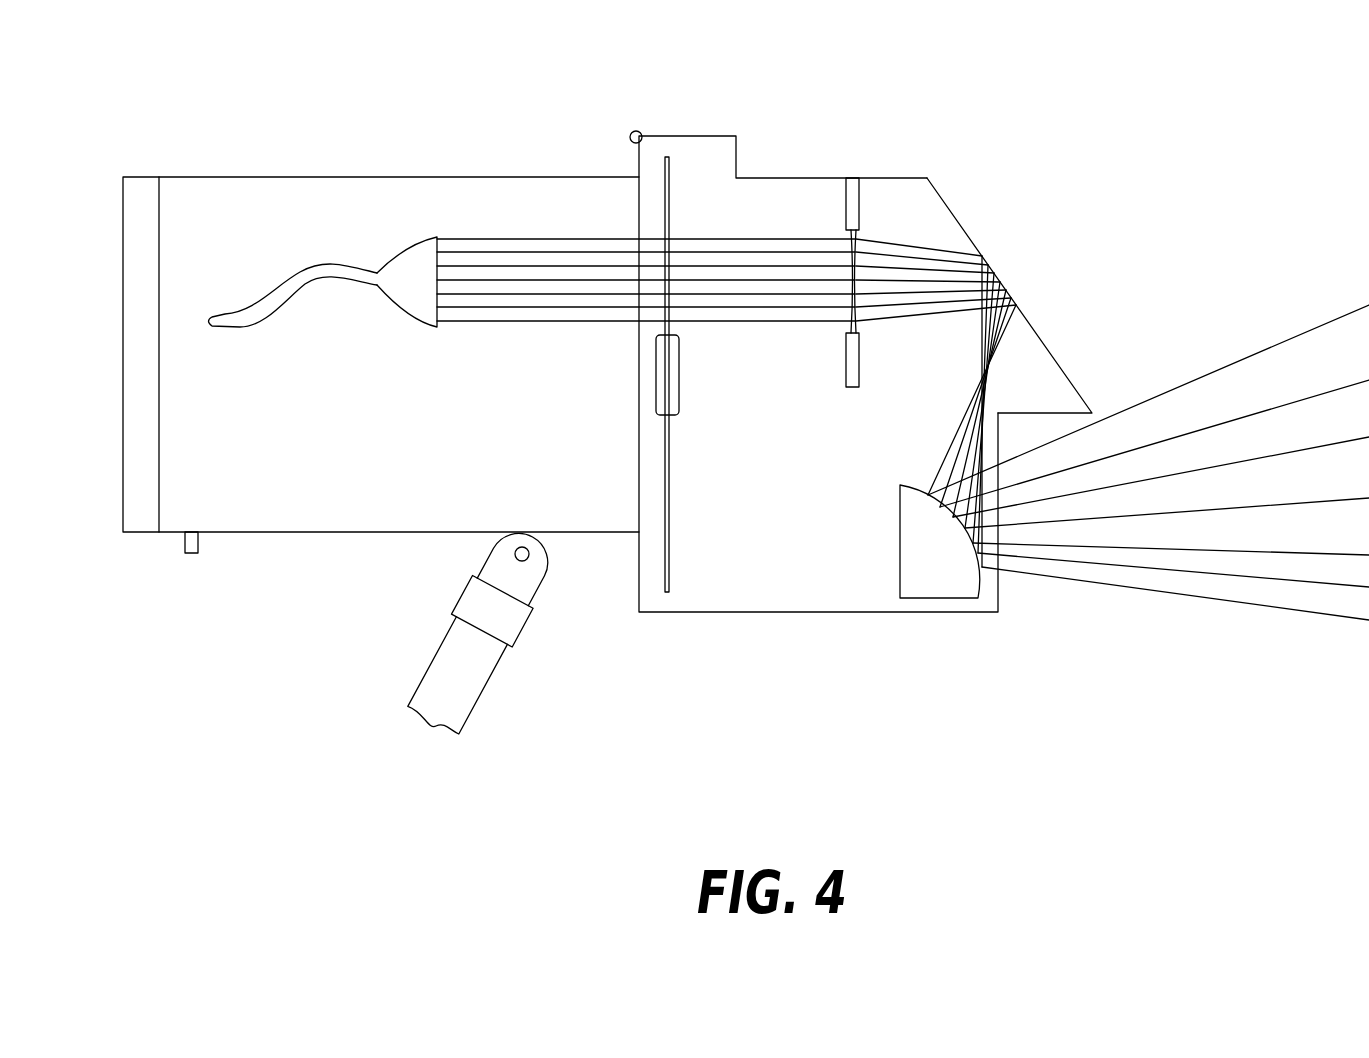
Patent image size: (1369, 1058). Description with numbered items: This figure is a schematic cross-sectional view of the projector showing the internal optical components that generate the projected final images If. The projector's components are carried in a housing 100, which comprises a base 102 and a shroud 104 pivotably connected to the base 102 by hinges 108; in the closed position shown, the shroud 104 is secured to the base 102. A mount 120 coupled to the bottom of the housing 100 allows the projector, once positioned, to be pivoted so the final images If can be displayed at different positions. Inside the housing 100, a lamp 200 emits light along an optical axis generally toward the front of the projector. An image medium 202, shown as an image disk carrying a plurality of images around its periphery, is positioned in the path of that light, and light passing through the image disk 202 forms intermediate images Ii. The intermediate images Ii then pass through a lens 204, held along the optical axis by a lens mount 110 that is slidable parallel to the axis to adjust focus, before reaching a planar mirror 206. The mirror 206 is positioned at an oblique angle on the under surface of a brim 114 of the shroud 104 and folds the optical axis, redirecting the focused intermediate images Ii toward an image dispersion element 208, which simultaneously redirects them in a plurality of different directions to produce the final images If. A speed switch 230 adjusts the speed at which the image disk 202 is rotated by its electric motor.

The housing 100 is at (693, 124).
The base 102 is at (377, 533).
The shroud 104 is at (800, 612).
The hinges 108 is at (630, 133).
The lens mount 110 is at (855, 208).
The brim 114 is at (1035, 330).
The mount 120 is at (577, 612).
The lamp 200 is at (429, 238).
The image medium 202 is at (672, 200).
The lens 204 is at (855, 248).
The planar mirror 206 is at (962, 247).
The image dispersion element 208 is at (992, 592).
The speed switch 230 is at (193, 556).
The intermediate images Ii is at (773, 238).
The final images If is at (1143, 402).